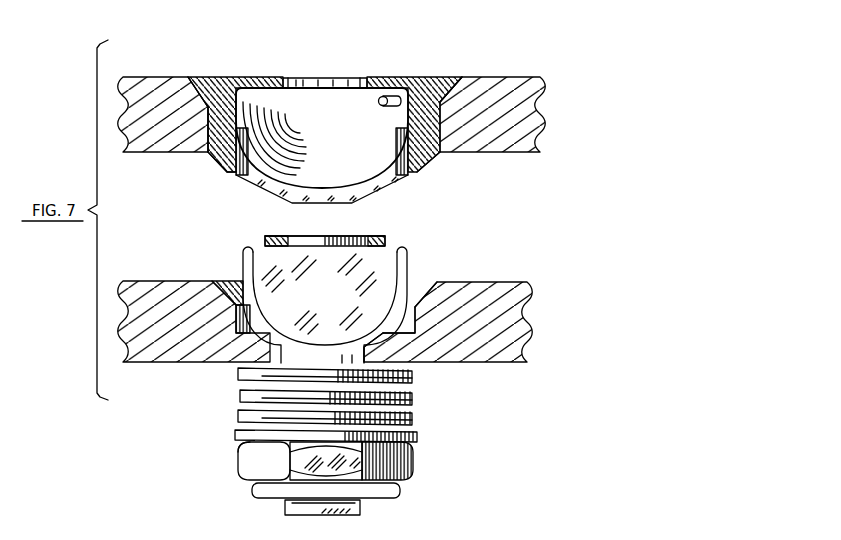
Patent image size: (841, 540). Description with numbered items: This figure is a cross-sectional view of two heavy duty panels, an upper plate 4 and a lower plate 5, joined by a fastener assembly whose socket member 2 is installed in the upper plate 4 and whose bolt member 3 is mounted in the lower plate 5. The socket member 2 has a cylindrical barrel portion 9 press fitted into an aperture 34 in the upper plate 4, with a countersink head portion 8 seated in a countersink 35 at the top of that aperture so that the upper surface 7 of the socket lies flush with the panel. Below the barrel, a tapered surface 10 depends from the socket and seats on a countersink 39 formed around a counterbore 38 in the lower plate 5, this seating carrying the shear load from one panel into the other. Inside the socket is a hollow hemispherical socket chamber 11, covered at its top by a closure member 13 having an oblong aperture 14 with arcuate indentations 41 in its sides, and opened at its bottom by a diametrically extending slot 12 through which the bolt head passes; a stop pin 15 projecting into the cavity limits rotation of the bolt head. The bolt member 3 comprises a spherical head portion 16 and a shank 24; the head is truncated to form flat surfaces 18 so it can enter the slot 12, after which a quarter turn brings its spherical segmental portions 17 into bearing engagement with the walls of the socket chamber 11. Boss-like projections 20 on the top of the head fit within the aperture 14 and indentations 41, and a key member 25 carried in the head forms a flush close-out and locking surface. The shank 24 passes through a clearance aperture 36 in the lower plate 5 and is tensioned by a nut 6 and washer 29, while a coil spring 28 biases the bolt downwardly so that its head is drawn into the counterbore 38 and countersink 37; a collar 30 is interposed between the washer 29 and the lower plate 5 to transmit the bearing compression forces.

The socket member 2 is at (390, 76).
The bolt member 3 is at (246, 240).
The upper plate 4 is at (522, 83).
The lower plate 5 is at (502, 300).
The nut 6 is at (250, 468).
The upper surface 7 is at (188, 78).
The countersink head portion 8 is at (178, 78).
The cylindrical barrel portion 9 is at (205, 130).
The tapered surface 10 is at (228, 158).
The hemispherical socket chamber 11 is at (322, 138).
The slot 12 is at (273, 186).
The closure member 13 is at (270, 84).
The aperture 14 is at (340, 83).
The stop pin 15 is at (381, 101).
The head portion 16 is at (329, 289).
The spherical segmental portions 17 is at (245, 270).
The flat surfaces 18 is at (256, 256).
The boss-like projections 20 is at (325, 237).
The shank 24 is at (368, 508).
The key member 25 is at (272, 237).
The coil spring 28 is at (240, 395).
The washer 29 is at (245, 441).
The collar 30 is at (245, 425).
The aperture 34 is at (425, 142).
The countersink 35 is at (445, 83).
The aperture 36 is at (382, 351).
The countersink 37 is at (265, 340).
The counterbore 38 is at (428, 318).
The countersink 39 is at (428, 292).
The arcuate indentations 41 is at (367, 83).